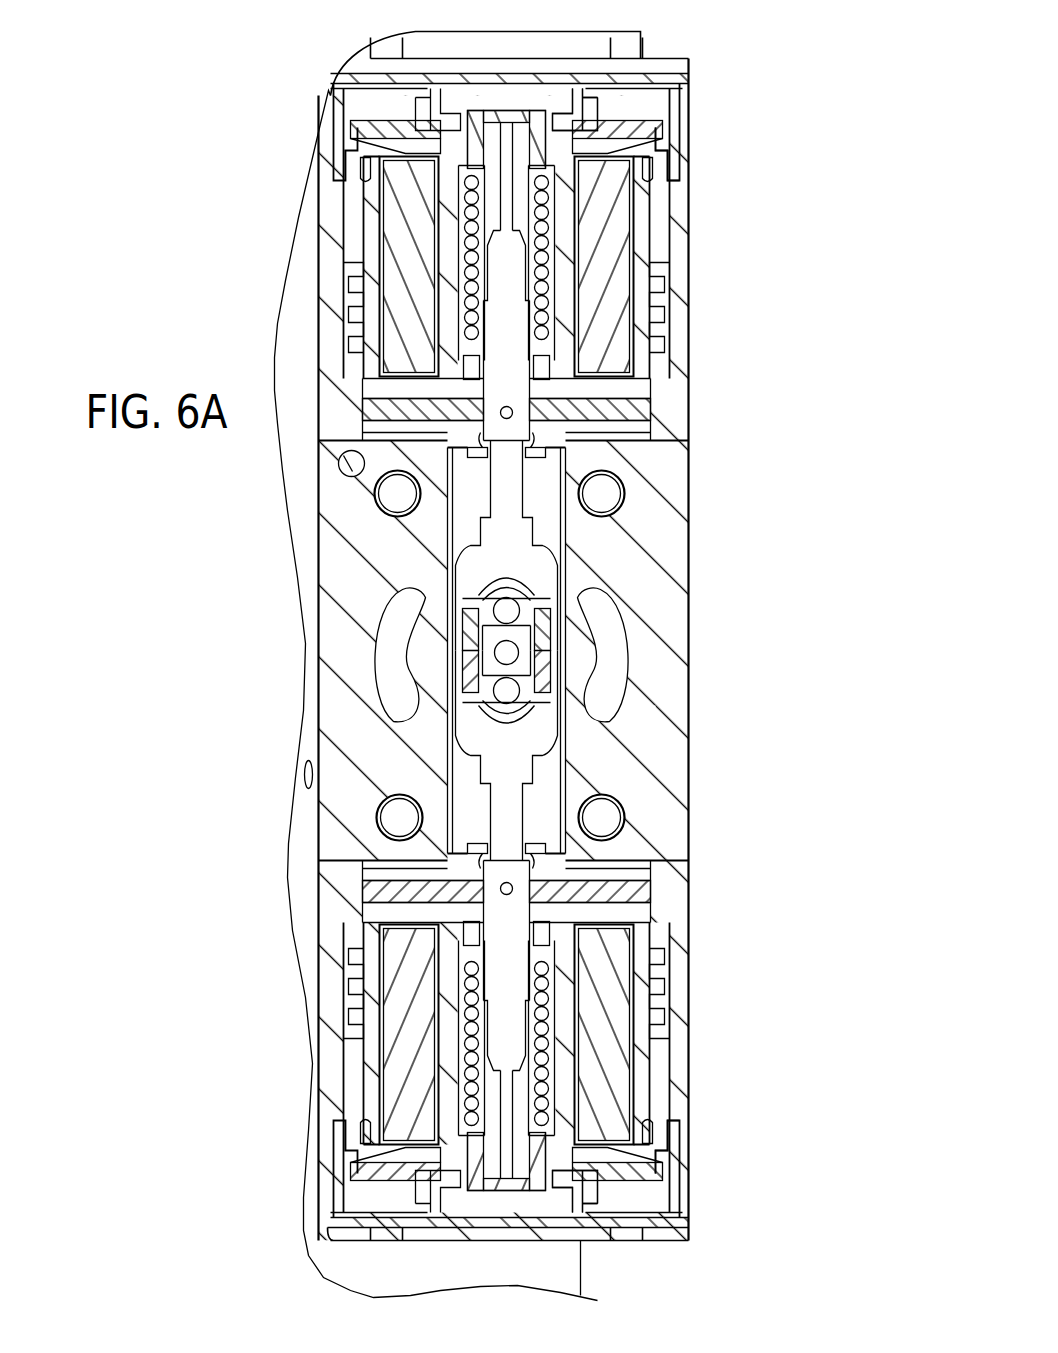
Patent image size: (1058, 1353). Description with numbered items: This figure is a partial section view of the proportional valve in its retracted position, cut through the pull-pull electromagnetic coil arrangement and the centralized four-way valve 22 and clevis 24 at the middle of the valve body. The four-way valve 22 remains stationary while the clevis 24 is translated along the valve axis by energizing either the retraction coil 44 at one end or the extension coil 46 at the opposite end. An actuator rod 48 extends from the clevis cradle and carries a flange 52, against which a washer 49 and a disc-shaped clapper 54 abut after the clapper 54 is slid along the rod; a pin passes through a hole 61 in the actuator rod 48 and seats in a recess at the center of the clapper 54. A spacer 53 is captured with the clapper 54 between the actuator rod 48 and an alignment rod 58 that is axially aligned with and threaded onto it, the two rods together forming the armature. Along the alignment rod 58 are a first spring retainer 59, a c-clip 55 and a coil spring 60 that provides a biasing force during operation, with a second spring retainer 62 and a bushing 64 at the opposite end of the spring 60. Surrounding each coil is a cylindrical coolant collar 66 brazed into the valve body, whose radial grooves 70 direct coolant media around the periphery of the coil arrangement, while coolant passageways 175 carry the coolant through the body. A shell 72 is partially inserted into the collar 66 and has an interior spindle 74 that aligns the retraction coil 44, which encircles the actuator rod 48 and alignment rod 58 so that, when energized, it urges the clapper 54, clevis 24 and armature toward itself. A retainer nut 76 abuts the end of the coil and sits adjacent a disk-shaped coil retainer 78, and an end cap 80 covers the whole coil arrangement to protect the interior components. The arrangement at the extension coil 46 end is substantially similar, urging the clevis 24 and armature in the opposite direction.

The four-way valve 22 is at (493, 570).
The clevis 24 is at (562, 668).
The retraction coil 44 is at (616, 274).
The extension coil 46 is at (619, 1061).
The actuator rod 48 is at (519, 779).
The washer 49 is at (476, 842).
The flange 52 is at (535, 833).
The spacer 53 is at (498, 933).
The clapper 54 is at (318, 858).
The c-clip 55 is at (462, 925).
The alignment rod 58 is at (513, 1170).
The first spring retainer 59 is at (552, 948).
The coil spring 60 is at (490, 955).
The hole 61 is at (500, 868).
The second spring retainer 62 is at (553, 1137).
The bushing 64 is at (530, 1160).
The coolant collar 66 is at (355, 1065).
The radial grooves 70 is at (343, 985).
The shell 72 is at (367, 1165).
The interior spindle 74 is at (495, 1215).
The retainer nut 76 is at (597, 1200).
The coil retainer 78 is at (612, 1177).
The end cap 80 is at (692, 1170).
The coolant passageway 175 is at (618, 658).